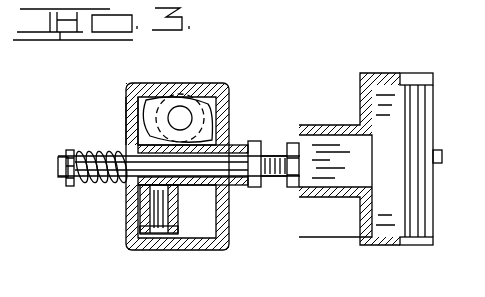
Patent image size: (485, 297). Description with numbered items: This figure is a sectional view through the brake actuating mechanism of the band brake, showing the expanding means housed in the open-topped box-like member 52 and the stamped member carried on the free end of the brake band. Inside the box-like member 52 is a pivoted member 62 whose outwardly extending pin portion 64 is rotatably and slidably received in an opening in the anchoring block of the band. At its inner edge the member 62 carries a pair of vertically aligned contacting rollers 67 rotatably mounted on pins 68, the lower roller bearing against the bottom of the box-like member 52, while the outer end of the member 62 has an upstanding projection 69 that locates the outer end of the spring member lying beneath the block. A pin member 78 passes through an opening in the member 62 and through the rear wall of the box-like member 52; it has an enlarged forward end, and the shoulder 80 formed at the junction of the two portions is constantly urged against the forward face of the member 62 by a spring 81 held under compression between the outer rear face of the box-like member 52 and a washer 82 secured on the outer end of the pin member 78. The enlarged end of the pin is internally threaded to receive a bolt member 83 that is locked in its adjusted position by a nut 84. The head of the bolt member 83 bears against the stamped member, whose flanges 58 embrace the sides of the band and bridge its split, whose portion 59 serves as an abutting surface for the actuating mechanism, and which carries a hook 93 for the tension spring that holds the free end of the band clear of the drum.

The box-like member 52 is at (204, 250).
The member 62 is at (142, 126).
The outwardly extending pin portion 64 is at (186, 118).
The upstanding projection 69 is at (186, 106).
The shoulder 80 is at (246, 190).
The pin member 78 is at (60, 168).
The washer 82 is at (70, 150).
The spring 81 is at (100, 152).
The nut 84 is at (254, 141).
The bolt member 83 is at (292, 150).
The portion 59 is at (349, 159).
The flanges 58 is at (396, 247).
The hook 93 is at (442, 155).
The contacting rollers 67 is at (150, 223).
The pins 68 is at (140, 231).